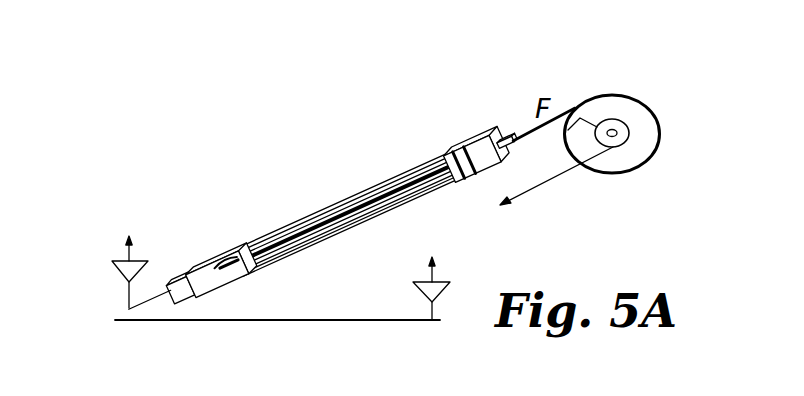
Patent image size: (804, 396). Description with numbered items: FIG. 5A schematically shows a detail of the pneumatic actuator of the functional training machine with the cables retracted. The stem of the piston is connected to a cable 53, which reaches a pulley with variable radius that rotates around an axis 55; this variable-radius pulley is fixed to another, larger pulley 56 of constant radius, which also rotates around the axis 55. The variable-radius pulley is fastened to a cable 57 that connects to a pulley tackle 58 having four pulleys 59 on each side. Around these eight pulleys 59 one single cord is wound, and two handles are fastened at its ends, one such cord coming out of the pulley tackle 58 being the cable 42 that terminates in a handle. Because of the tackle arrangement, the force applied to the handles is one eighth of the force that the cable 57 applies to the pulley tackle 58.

The cable 42 is at (128, 293).
The cable 53 is at (548, 182).
The axis 55 is at (612, 122).
The pulley 56 is at (648, 123).
The cable 57 is at (518, 132).
The pulley tackle 58 is at (321, 188).
The pulleys 59 is at (211, 260).